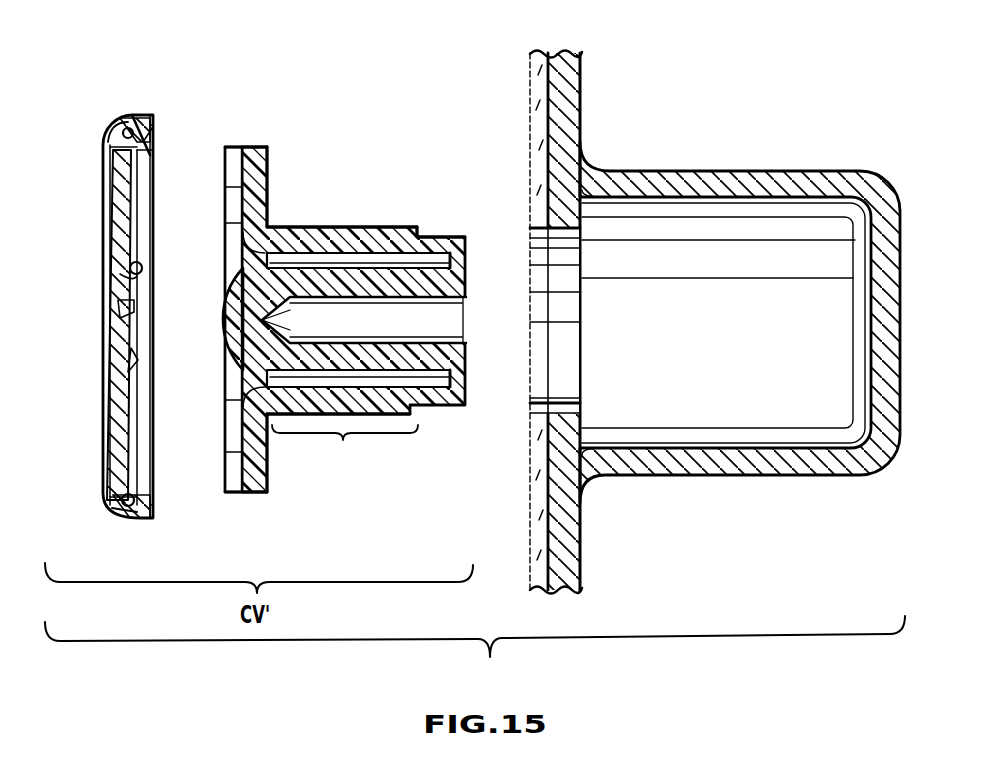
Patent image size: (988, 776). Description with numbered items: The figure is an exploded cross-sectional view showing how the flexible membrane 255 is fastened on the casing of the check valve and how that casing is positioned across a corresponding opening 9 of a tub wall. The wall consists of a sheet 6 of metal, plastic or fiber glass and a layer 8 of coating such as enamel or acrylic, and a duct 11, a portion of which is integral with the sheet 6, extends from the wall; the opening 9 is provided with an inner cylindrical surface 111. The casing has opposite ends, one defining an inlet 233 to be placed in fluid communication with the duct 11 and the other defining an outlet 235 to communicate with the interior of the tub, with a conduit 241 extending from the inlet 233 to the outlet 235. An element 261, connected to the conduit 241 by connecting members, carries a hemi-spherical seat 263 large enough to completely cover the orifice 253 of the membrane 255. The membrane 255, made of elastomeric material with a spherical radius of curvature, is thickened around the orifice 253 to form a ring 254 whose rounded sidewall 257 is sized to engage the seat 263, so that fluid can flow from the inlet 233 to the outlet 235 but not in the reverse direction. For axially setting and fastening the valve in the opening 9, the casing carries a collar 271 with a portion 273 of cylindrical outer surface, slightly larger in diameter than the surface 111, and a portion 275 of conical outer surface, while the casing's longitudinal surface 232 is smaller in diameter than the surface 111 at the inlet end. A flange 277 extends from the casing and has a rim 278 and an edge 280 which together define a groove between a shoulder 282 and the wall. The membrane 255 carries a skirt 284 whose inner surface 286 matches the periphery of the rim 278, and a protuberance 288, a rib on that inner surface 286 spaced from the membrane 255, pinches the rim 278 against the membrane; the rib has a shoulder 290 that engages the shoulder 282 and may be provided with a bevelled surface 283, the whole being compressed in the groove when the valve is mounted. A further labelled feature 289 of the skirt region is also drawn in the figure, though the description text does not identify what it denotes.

The sheet 6 is at (572, 52).
The layer of coating 8 is at (535, 52).
The opening 9 is at (583, 305).
The duct 11 is at (720, 172).
The inner cylindrical surface 111 is at (537, 378).
The longitudinal surface 232 is at (455, 235).
The inlet 233 is at (467, 262).
The outlet 235 is at (245, 383).
The conduit 241 is at (462, 258).
The orifice 253 is at (115, 330).
The ring 254 is at (130, 262).
The flexible membrane 255 is at (111, 221).
The rounded sidewall 257 is at (123, 322).
The element 261 is at (460, 322).
The seat 263 is at (232, 290).
The collar 271 is at (345, 450).
The portion of cylindrical outer surface 273 is at (377, 227).
The portion of conical outer surface 275 is at (413, 227).
The flange 277 is at (262, 198).
The rim 278 is at (233, 144).
The edge 280 is at (260, 153).
The shoulder 282 is at (250, 147).
The bevelled surface 283 is at (155, 160).
The skirt 284 is at (126, 128).
The inner surface 286 is at (130, 128).
The protuberance 288 is at (143, 118).
The cap wall 289 is at (152, 125).
The shoulder 290 is at (110, 145).